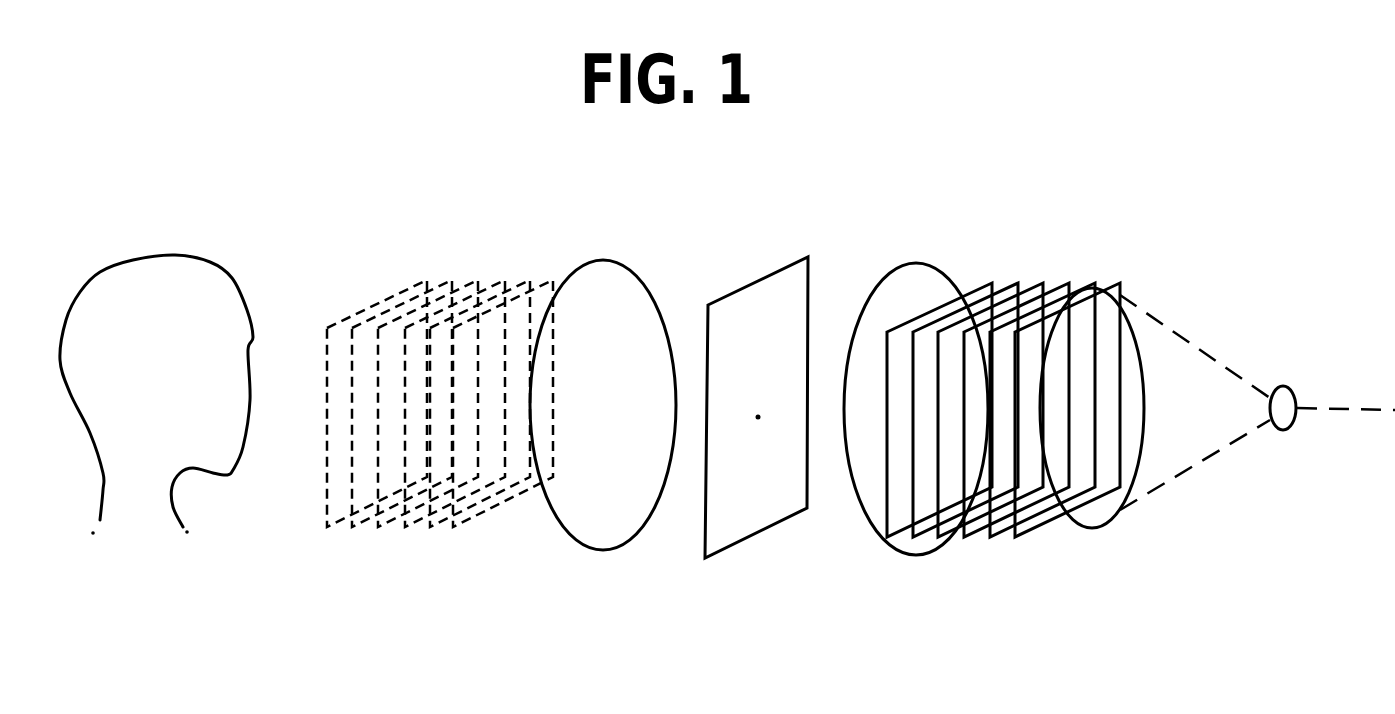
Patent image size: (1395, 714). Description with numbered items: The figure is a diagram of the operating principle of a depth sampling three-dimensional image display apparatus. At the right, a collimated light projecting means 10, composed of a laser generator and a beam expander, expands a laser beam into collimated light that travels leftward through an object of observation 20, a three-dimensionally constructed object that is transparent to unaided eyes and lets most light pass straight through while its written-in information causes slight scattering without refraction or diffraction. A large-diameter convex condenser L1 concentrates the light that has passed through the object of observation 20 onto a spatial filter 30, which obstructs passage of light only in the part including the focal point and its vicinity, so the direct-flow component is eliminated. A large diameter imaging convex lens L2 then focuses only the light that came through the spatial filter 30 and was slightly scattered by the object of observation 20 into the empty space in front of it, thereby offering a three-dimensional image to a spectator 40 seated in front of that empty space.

The collimated light projecting means 10 is at (1187, 497).
The object of observation 20 is at (1002, 553).
The spatial filter 30 is at (743, 527).
The spectator 40 is at (143, 520).
The large-diameter convex condenser L1 is at (898, 552).
The large diameter imaging convex lens L2 is at (600, 537).